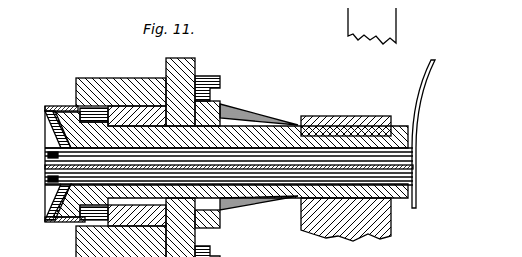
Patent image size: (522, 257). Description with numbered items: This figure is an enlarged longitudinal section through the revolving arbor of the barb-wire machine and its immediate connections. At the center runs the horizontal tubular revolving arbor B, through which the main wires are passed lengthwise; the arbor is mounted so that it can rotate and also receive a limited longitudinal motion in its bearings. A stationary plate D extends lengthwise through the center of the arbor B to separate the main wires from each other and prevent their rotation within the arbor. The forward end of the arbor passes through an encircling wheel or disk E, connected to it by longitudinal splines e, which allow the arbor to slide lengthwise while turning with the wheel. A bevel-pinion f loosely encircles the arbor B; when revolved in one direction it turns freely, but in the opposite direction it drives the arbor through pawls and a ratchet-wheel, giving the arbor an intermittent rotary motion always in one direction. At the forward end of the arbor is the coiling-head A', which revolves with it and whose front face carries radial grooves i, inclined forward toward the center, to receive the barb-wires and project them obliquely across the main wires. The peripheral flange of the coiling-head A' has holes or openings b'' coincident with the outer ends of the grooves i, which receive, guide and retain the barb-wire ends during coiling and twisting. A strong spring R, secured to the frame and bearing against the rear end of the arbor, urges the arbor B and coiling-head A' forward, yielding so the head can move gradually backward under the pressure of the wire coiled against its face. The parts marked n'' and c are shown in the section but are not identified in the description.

The encircling wheel or disk E is at (188, 63).
The flange block n'' is at (180, 150).
The threads c is at (98, 100).
The holes or openings b'' is at (78, 232).
The coiling-head A' is at (211, 164).
The radial grooves i is at (43, 188).
The longitudinal splines e is at (210, 97).
The bevel-pinion f is at (262, 112).
The tubular revolving arbor B is at (393, 128).
The stationary plate D is at (405, 155).
The spring R is at (418, 68).